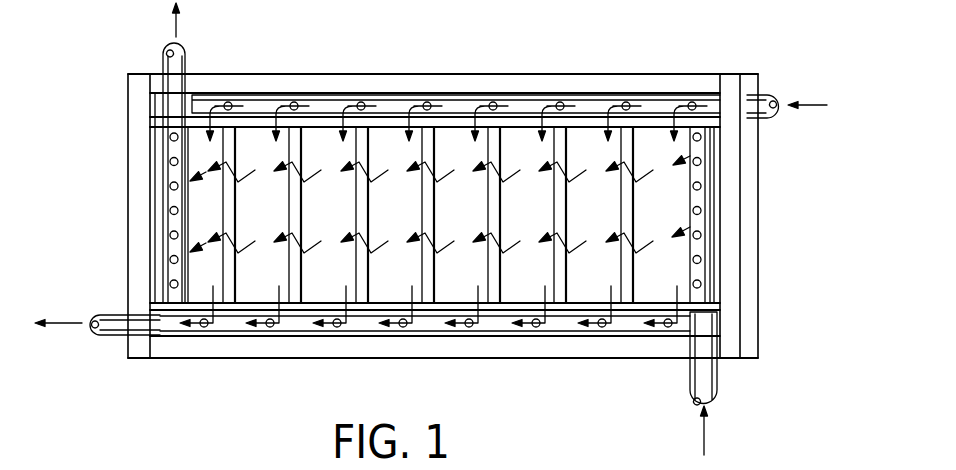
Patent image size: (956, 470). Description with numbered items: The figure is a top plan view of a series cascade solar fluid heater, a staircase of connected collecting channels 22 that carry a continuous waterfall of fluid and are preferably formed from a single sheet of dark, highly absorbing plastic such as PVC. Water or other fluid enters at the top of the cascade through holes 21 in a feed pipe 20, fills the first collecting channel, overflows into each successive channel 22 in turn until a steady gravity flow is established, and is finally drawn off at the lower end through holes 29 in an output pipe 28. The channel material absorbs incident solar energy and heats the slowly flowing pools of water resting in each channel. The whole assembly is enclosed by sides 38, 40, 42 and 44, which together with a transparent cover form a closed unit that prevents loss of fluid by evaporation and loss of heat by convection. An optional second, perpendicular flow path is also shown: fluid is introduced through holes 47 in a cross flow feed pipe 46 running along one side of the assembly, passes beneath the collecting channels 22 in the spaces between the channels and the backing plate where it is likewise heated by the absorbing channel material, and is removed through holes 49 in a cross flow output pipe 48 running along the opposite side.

The feed pipe 20 is at (718, 393).
The holes 21 is at (699, 186).
The collecting channels 22 is at (580, 137).
The output pipe 28 is at (187, 53).
The holes 29 is at (173, 260).
The side 38 is at (142, 190).
The side 40 is at (748, 238).
The side 42 is at (502, 350).
The side 44 is at (398, 82).
The cross flow feed pipe 46 is at (762, 95).
The holes 47 is at (302, 102).
The cross flow output pipe 48 is at (110, 338).
The holes 49 is at (272, 323).